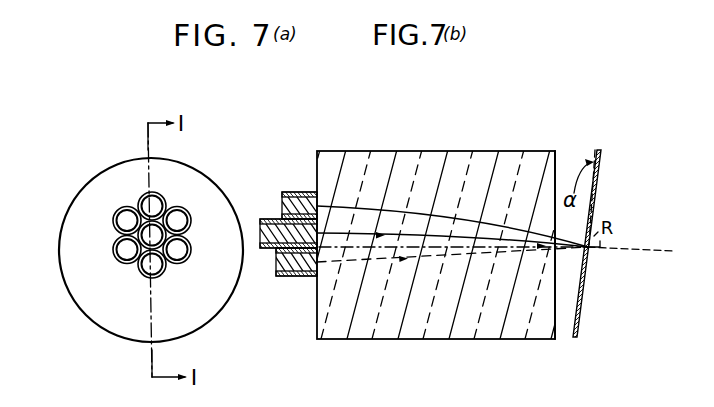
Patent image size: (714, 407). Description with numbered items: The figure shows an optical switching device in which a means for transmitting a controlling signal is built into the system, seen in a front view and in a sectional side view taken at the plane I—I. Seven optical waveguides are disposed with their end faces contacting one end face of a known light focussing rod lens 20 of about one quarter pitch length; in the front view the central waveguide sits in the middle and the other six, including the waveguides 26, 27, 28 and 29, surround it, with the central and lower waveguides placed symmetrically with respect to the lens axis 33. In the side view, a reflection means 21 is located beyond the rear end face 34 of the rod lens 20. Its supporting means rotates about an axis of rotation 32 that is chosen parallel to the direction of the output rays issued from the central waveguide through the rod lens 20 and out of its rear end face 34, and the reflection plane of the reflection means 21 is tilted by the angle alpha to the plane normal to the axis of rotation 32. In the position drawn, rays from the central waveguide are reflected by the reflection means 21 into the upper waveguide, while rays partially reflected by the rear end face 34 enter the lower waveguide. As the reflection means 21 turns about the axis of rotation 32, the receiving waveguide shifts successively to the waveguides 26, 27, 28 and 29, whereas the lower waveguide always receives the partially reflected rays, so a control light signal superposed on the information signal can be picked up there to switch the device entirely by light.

The light focussing rod lens 20 is at (440, 151).
The reflection means 21 is at (602, 172).
The optical waveguide 26 is at (129, 226).
The optical waveguide 27 is at (130, 252).
The optical waveguide 28 is at (175, 248).
The optical waveguide 29 is at (175, 223).
The axis of rotation 32 is at (640, 253).
The lens axis 33 is at (378, 246).
The rear end face of the rod lens 34 is at (557, 180).